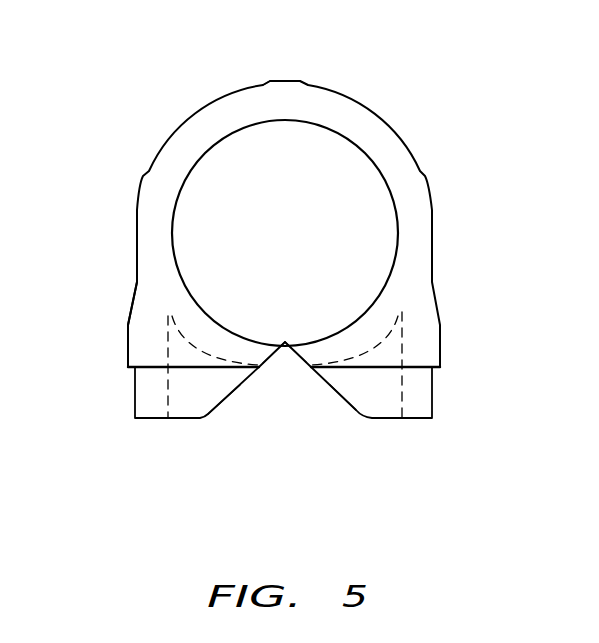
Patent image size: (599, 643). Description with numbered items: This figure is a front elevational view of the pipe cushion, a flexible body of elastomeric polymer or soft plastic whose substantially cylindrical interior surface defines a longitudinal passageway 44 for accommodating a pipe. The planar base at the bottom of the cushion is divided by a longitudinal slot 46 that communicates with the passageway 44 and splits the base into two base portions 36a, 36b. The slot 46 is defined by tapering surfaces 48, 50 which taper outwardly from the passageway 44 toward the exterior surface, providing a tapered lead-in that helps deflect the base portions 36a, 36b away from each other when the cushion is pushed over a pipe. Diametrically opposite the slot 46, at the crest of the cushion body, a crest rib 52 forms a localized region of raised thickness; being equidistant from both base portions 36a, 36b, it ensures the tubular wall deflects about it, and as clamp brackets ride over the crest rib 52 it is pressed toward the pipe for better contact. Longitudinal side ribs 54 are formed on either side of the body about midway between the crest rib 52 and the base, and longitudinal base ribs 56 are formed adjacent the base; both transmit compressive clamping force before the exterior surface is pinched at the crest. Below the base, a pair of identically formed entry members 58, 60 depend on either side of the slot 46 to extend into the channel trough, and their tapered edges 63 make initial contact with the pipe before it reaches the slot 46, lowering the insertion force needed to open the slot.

The base portion 36a is at (177, 342).
The base portion 36b is at (410, 335).
The longitudinal passageway 44 is at (317, 152).
The longitudinal slot 46 is at (283, 356).
The tapering surface 48 is at (263, 361).
The tapering surface 50 is at (302, 367).
The crest rib 52 is at (288, 80).
The longitudinal side rib 54 is at (137, 186).
The longitudinal base rib 56 is at (128, 345).
The entry member 58 is at (416, 418).
The entry member 60 is at (148, 418).
The chamfered edges 63 is at (227, 398).